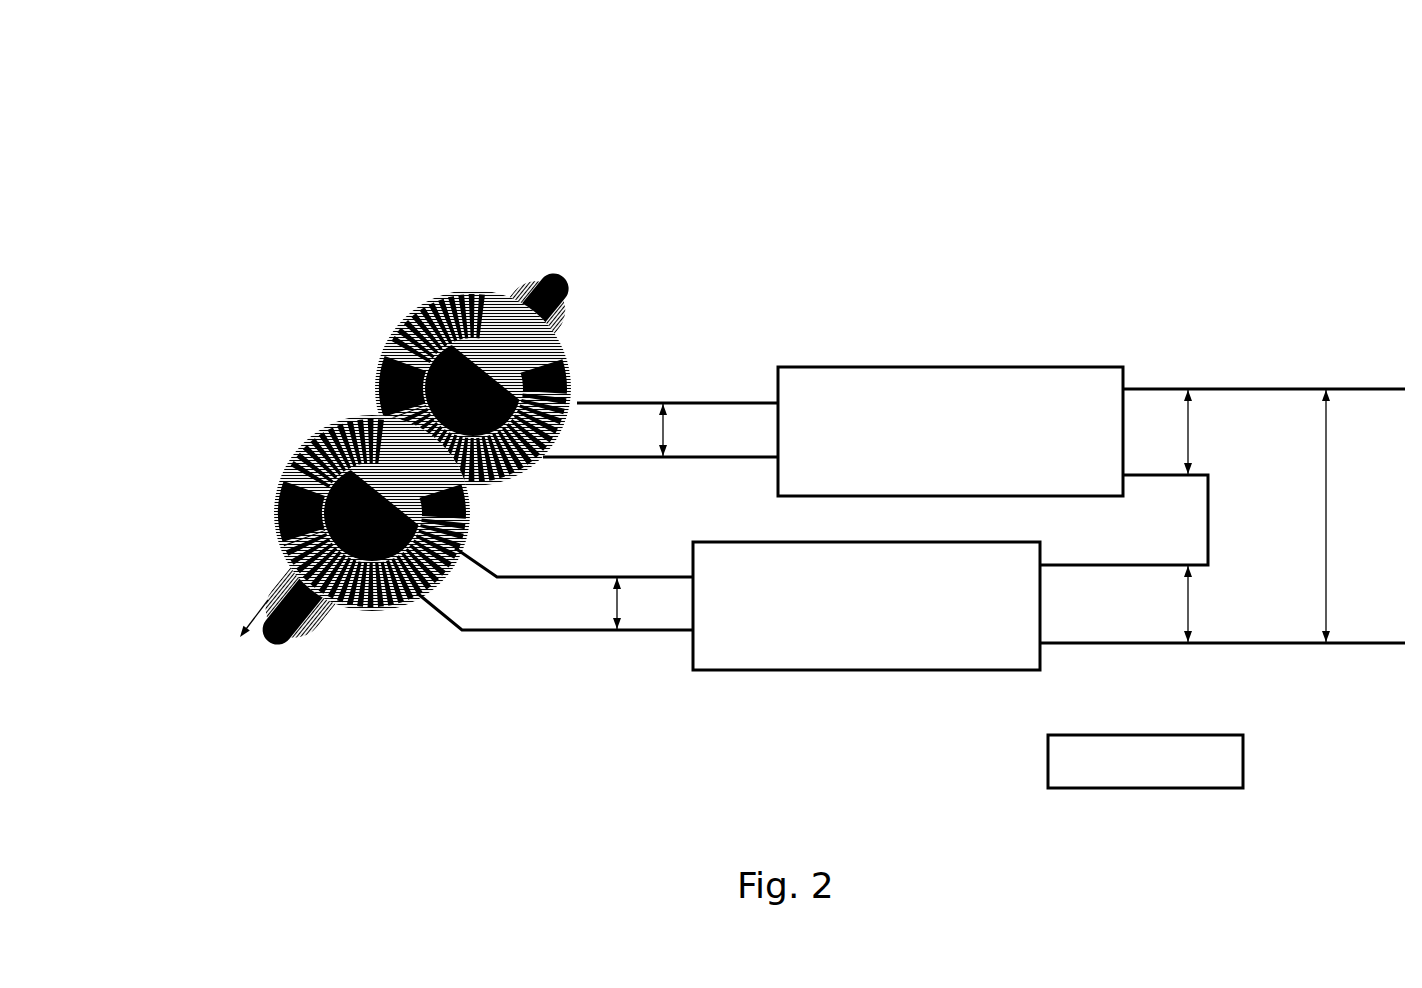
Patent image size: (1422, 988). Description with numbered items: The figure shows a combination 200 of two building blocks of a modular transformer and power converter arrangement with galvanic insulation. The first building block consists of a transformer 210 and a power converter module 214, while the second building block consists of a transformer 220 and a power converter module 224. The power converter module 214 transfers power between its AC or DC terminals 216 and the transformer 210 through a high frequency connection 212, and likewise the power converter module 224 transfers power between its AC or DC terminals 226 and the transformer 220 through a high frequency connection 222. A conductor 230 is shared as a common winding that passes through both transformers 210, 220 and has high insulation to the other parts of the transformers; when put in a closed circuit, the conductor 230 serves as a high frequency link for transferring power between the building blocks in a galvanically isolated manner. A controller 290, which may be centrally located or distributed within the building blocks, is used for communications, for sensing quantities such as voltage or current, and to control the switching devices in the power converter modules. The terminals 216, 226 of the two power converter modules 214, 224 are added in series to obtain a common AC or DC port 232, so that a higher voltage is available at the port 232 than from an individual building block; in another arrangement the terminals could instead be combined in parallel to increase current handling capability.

The combination of two building blocks 200 is at (1212, 127).
The transformer 210 is at (378, 307).
The high frequency connection 212 is at (675, 427).
The power converter module 214 is at (972, 360).
The AC or DC terminals 216 is at (1198, 432).
The transformer 220 is at (261, 462).
The high frequency connection 222 is at (611, 603).
The power converter module 224 is at (894, 677).
The AC or DC terminals 226 is at (1198, 606).
The conductor 230 is at (555, 275).
The common AC or DC port 232 is at (1332, 522).
The controller 290 is at (1248, 762).